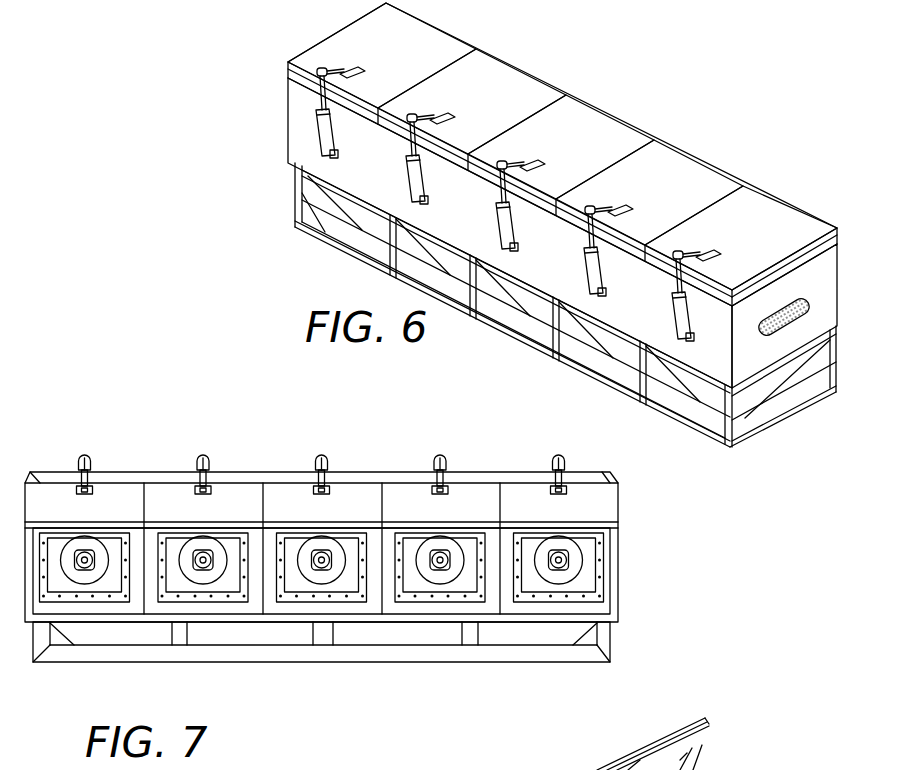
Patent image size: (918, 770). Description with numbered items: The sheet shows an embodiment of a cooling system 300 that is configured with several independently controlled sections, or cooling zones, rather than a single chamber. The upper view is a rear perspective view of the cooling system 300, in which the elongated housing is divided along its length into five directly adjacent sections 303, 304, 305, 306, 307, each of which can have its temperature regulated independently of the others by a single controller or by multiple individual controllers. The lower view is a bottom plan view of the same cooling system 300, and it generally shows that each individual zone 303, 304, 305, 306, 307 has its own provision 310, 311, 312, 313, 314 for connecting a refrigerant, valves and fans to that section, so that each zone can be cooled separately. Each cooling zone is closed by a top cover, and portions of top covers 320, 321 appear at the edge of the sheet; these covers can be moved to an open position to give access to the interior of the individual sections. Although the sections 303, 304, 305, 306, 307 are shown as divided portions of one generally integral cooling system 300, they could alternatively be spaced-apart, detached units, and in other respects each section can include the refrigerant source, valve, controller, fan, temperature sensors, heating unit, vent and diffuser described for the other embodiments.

In FIG. 6, the cooling system 300 is at (246, 108).
In FIG. 7, the cooling system 300 is at (152, 433).
In FIG. 6, the section 303 is at (342, 45).
In FIG. 6, the section 304 is at (512, 82).
In FIG. 6, the section 305 is at (603, 128).
In FIG. 6, the section 306 is at (688, 172).
In FIG. 6, the section 307 is at (782, 215).
In FIG. 7, the provision 310 is at (87, 580).
In FIG. 7, the provision 311 is at (204, 580).
In FIG. 7, the provision 312 is at (318, 580).
In FIG. 7, the provision 313 is at (438, 580).
In FIG. 7, the provision 314 is at (556, 580).
In FIG. 7, the top cover 320 is at (592, 769).
In FIG. 7, the top cover 321 is at (690, 721).